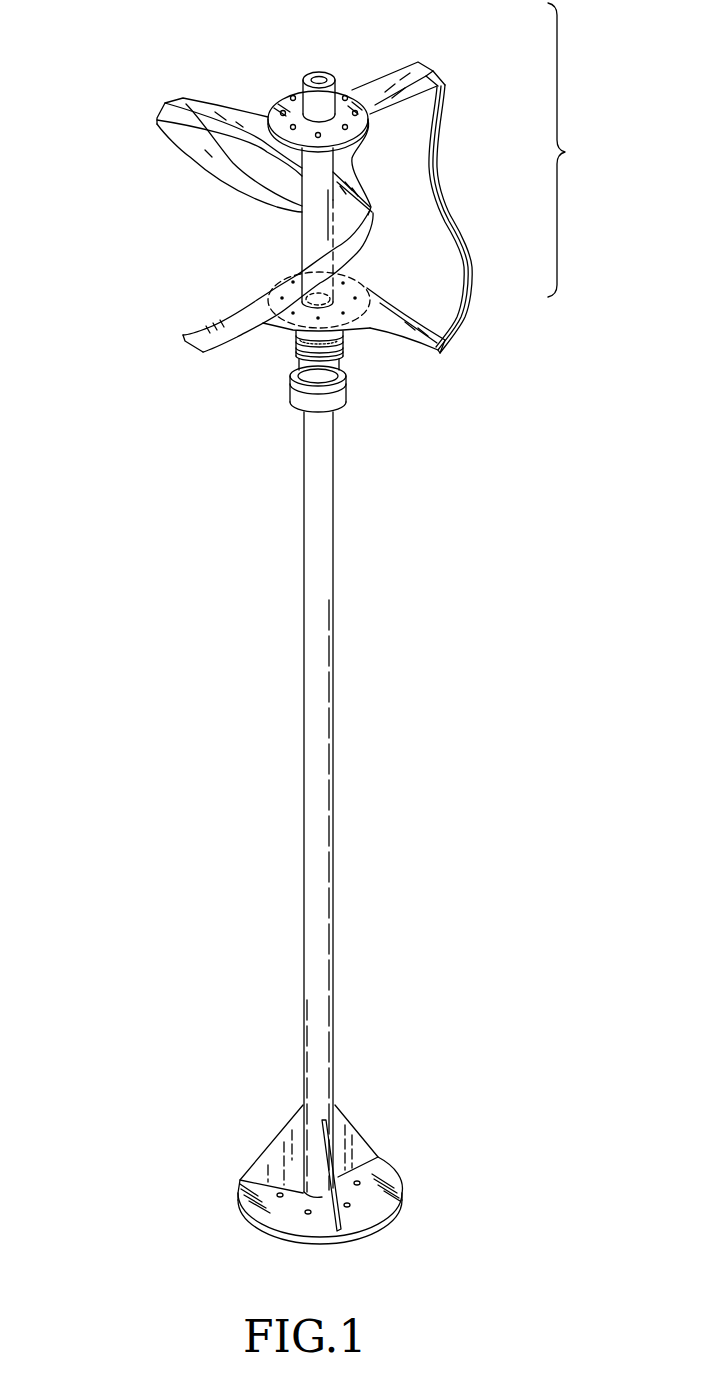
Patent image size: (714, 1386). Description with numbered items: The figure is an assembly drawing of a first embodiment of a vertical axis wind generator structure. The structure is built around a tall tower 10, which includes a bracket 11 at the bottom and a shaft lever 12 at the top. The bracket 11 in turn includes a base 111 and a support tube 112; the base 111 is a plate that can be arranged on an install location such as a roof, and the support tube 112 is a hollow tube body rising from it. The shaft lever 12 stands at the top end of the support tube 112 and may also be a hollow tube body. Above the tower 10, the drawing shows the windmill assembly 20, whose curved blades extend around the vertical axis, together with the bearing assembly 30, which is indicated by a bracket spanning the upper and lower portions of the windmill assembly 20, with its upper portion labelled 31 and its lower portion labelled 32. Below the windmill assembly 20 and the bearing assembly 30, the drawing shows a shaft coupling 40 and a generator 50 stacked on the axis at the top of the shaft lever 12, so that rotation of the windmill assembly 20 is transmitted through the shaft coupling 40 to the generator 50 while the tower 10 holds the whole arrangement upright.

The tower 10 is at (386, 643).
The bracket 11 is at (290, 1043).
The base 111 is at (240, 1198).
The support tube 112 is at (313, 1078).
The shaft lever 12 is at (320, 83).
The windmill assembly 20 is at (160, 250).
The bearing assembly 30 is at (390, 178).
The upper flange 31 is at (353, 90).
The lower flange 32 is at (367, 290).
The shaft coupling 40 is at (297, 348).
The generator 50 is at (345, 393).